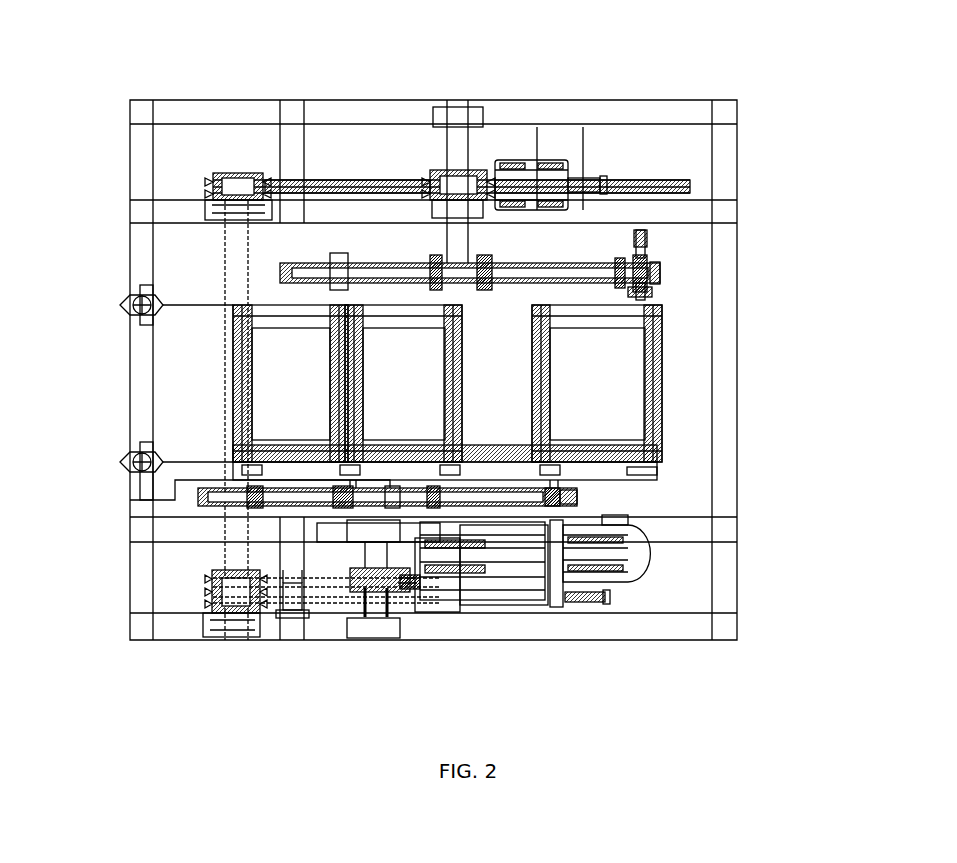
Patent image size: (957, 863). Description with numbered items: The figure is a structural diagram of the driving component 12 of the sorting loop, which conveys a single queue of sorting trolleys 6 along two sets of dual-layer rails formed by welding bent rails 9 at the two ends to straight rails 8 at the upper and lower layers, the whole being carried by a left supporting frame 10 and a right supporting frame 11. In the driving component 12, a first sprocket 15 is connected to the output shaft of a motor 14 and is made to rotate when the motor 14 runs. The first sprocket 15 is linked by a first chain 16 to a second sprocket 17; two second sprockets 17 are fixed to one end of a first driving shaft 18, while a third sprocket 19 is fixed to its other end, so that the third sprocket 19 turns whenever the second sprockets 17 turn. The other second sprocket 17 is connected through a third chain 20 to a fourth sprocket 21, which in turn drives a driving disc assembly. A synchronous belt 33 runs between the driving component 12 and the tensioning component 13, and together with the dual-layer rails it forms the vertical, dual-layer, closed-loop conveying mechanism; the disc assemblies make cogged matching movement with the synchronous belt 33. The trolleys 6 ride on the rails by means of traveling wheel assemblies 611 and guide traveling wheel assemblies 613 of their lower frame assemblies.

The sorting trolley 6 is at (613, 413).
The straight rail 8 is at (550, 590).
The bent rail 9 is at (503, 612).
The left supporting frame 10 is at (328, 603).
The right supporting frame 11 is at (213, 577).
The driving component 12 is at (220, 440).
The tensioning component 13 is at (213, 180).
The motor 14 is at (292, 583).
The first sprocket 15 is at (377, 610).
The first chain 16 is at (335, 180).
The second sprocket 17 is at (432, 190).
The first driving shaft 18 is at (400, 605).
The third sprocket 19 is at (200, 502).
The third chain 20 is at (455, 190).
The fourth sprocket 21 is at (498, 272).
The synchronous belt 33 is at (657, 267).
The traveling wheel assembly 611 is at (655, 473).
The guide traveling wheel assembly 613 is at (645, 293).